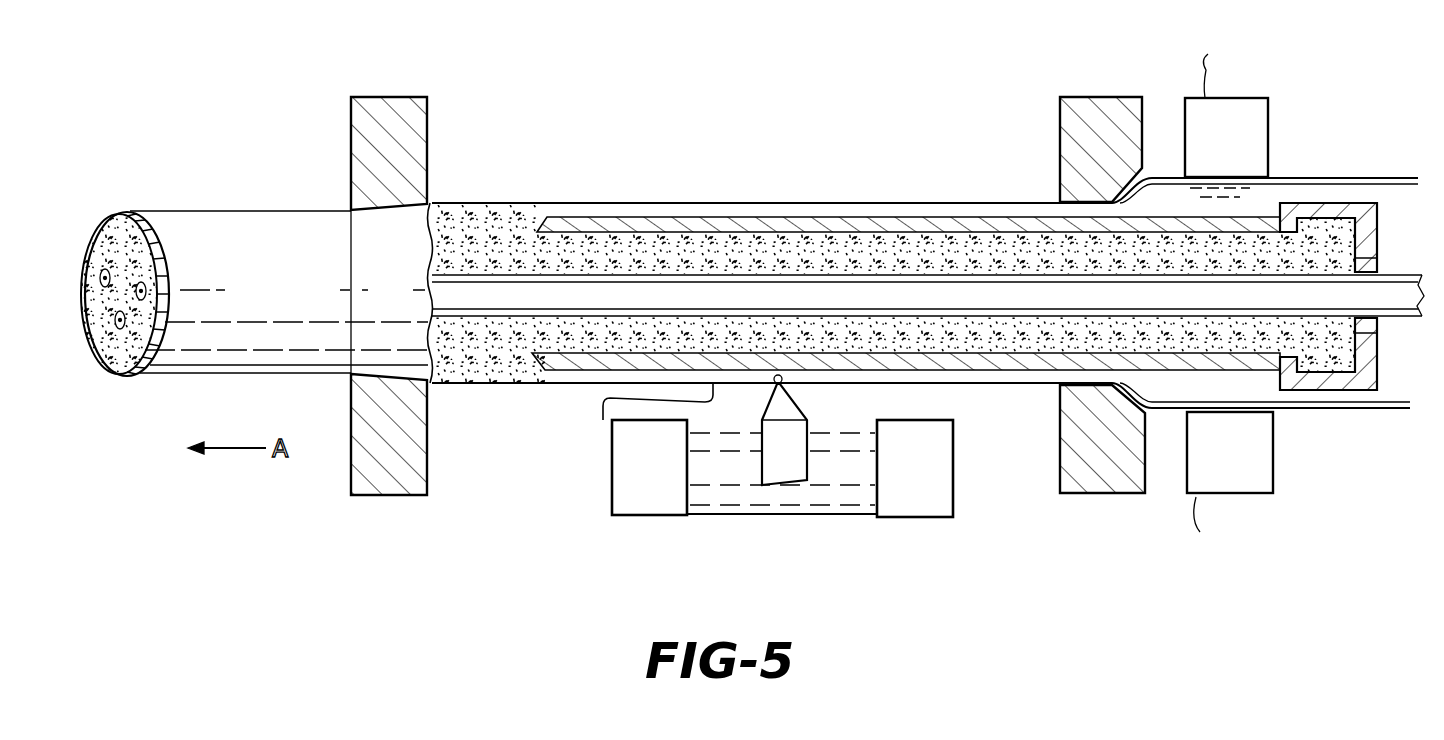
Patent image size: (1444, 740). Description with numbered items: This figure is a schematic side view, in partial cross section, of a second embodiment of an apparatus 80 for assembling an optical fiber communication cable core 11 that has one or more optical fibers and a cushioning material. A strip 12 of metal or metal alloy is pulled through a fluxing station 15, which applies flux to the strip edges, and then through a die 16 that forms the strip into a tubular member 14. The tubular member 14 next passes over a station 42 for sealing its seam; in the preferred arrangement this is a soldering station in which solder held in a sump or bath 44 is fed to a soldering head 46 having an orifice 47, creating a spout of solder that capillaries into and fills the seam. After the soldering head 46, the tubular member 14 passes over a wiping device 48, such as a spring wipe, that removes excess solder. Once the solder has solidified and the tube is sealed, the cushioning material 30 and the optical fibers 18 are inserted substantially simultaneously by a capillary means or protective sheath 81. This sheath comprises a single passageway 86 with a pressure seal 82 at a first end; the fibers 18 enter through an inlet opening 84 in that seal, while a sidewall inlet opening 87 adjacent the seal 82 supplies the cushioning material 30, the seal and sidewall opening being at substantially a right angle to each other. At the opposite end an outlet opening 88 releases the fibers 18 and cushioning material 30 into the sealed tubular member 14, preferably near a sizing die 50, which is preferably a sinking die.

The cable core 11 is at (761, 285).
The strip 12 is at (1361, 190).
The tubular member 14 is at (288, 221).
The fluxing station 15 is at (1240, 153).
The die 16 is at (1098, 105).
The optical fibers 18 is at (140, 301).
The cushioning material 30 is at (121, 244).
The station 42 is at (820, 517).
The sump or bath 44 is at (718, 490).
The soldering head 46 is at (789, 430).
The orifice 47 is at (773, 384).
The wiping device 48 is at (600, 412).
The sizing die 50 is at (391, 496).
The apparatus 80 is at (906, 258).
The capillary means or protective sheath 81 is at (990, 216).
The pressure seal 82 is at (1380, 268).
The inlet opening 84 is at (1381, 321).
The passageway 86 is at (1351, 390).
The inlet opening 87 is at (1306, 237).
The outlet opening 88 is at (534, 247).